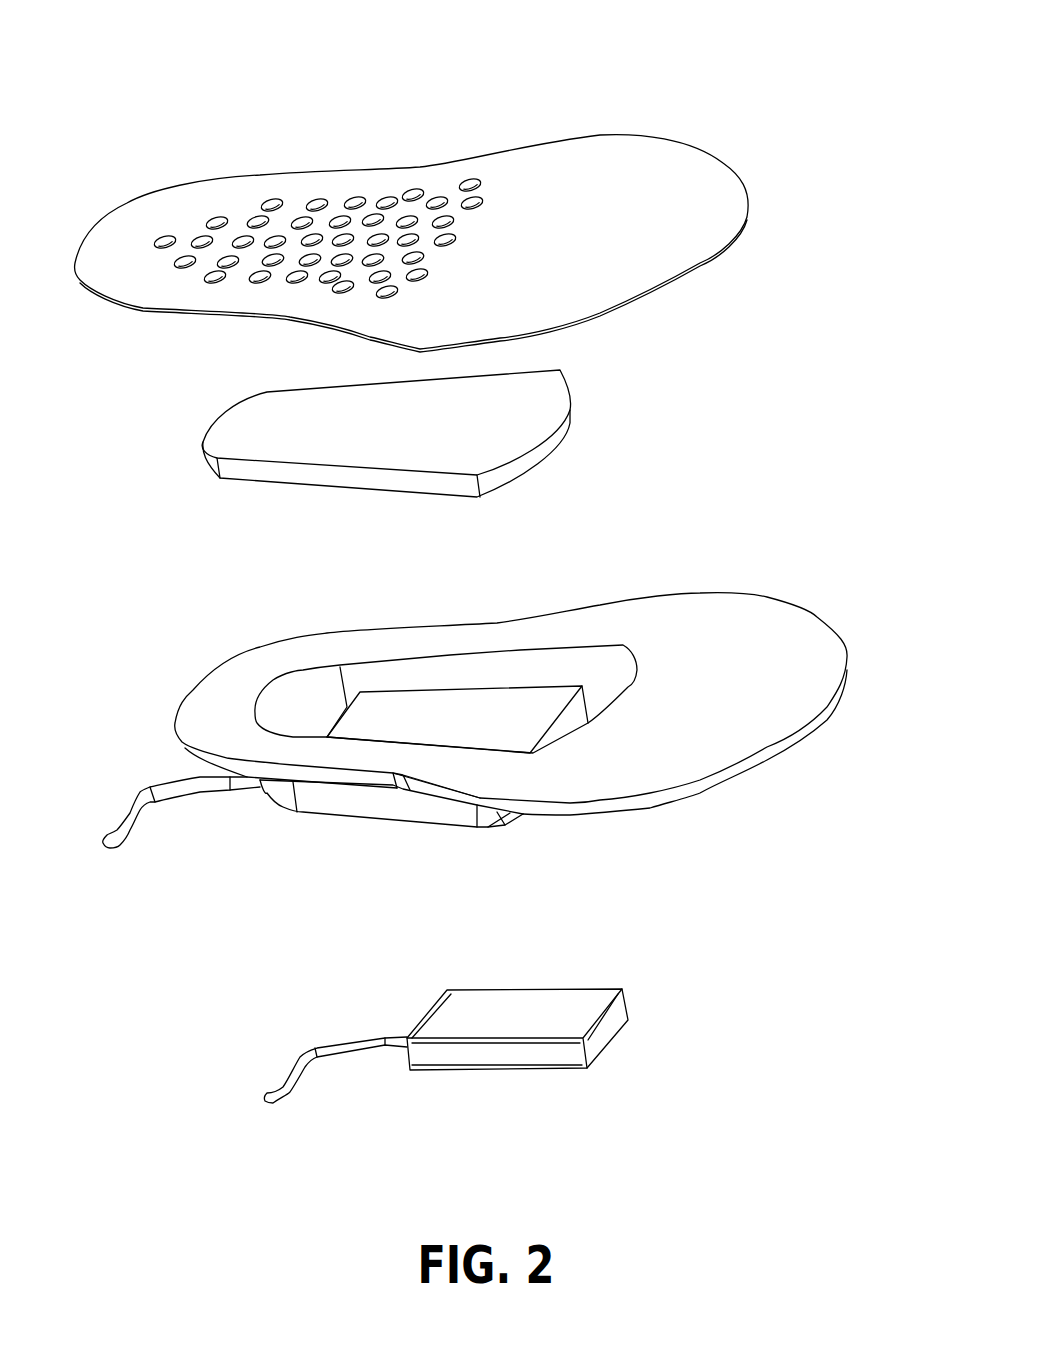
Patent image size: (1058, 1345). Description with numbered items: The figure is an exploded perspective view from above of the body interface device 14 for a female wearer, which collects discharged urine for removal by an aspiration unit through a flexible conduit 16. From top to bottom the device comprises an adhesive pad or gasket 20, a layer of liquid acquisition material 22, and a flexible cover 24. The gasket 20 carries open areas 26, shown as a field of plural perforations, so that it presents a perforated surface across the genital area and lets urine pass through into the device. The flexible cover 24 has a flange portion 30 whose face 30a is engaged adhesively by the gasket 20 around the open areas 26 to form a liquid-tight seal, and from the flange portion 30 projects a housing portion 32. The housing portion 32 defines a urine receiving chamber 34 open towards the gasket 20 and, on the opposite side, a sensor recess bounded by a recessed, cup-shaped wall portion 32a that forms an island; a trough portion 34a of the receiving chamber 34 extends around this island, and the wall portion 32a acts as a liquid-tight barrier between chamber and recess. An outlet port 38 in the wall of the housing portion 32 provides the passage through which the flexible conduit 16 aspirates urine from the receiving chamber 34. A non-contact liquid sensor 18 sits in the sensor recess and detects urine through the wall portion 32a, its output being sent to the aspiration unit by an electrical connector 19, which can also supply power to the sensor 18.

The body interface device 14 is at (230, 66).
The adhesive pad 20 is at (622, 135).
The open areas 26 is at (267, 205).
The liquid acquisition material 22 is at (567, 422).
The flexible cover 24 is at (406, 598).
The flange portion 30 is at (698, 603).
The face 30a is at (790, 640).
The housing portion 32 is at (333, 813).
The wall portion 32a is at (383, 713).
The urine receiving chamber 34 is at (520, 667).
The trough portion 34a is at (602, 710).
The flexible conduit 16 is at (150, 800).
The outlet port 38 is at (250, 790).
The non-contact liquid sensor 18 is at (587, 1013).
The electrical connector 19 is at (285, 1093).